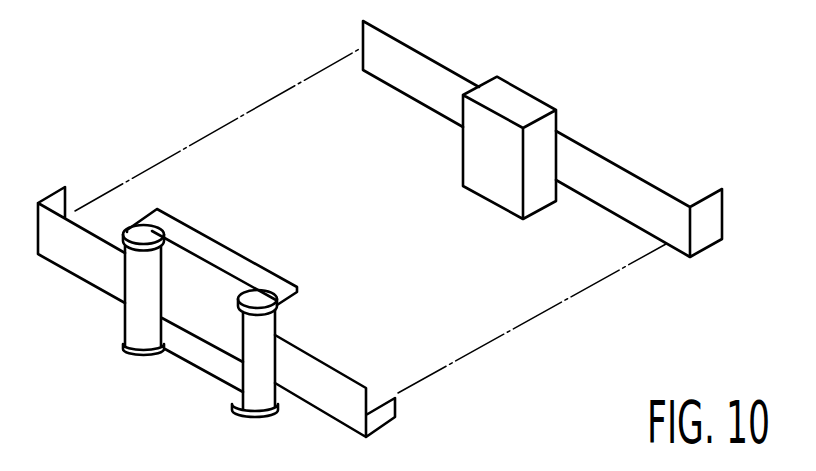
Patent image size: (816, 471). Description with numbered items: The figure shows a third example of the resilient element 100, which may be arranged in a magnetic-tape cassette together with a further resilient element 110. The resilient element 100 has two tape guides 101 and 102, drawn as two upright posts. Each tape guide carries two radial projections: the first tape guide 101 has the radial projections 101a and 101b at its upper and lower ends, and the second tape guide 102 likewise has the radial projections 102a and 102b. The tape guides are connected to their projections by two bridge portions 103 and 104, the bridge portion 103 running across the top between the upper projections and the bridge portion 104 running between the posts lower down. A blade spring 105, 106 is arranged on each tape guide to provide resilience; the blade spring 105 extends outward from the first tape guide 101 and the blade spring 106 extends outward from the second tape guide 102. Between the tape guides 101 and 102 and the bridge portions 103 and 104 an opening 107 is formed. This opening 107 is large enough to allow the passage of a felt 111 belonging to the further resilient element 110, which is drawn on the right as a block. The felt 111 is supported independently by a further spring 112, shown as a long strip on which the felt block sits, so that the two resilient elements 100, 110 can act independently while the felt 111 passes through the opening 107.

The resilient element 100 is at (289, 331).
The tape guide 101 is at (134, 312).
The radial projection 101a is at (150, 228).
The radial projection 101b is at (133, 360).
The tape guide 102 is at (254, 378).
The radial projection 102a is at (258, 310).
The radial projection 102b is at (255, 417).
The bridge portion 103 is at (218, 259).
The bridge portion 104 is at (205, 350).
The blade spring 105 is at (73, 257).
The blade spring 106 is at (323, 392).
The opening 107 is at (203, 312).
The further resilient element 110 is at (571, 124).
The felt 111 is at (500, 93).
The further spring 112 is at (613, 185).